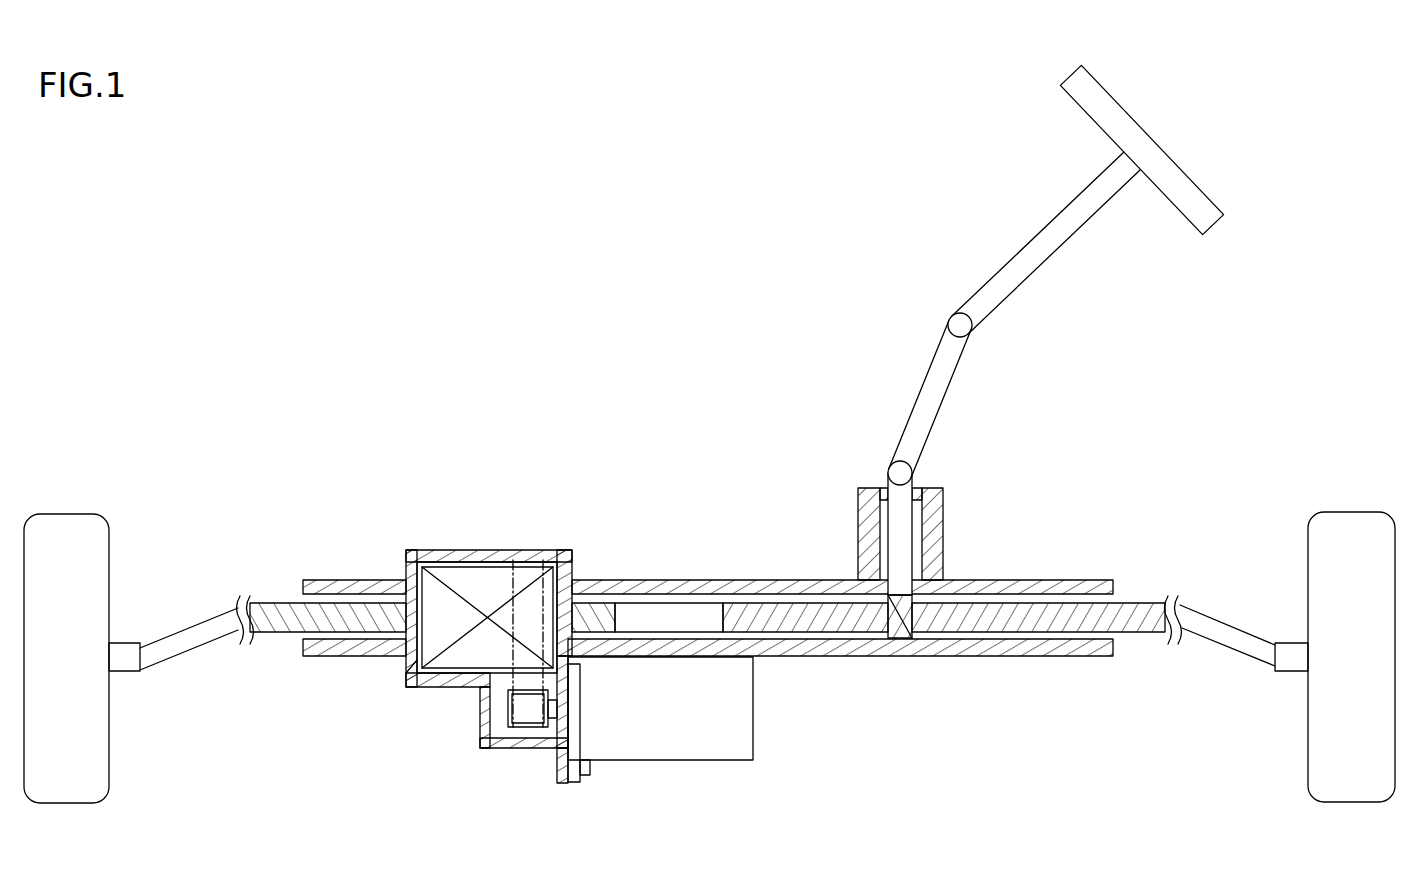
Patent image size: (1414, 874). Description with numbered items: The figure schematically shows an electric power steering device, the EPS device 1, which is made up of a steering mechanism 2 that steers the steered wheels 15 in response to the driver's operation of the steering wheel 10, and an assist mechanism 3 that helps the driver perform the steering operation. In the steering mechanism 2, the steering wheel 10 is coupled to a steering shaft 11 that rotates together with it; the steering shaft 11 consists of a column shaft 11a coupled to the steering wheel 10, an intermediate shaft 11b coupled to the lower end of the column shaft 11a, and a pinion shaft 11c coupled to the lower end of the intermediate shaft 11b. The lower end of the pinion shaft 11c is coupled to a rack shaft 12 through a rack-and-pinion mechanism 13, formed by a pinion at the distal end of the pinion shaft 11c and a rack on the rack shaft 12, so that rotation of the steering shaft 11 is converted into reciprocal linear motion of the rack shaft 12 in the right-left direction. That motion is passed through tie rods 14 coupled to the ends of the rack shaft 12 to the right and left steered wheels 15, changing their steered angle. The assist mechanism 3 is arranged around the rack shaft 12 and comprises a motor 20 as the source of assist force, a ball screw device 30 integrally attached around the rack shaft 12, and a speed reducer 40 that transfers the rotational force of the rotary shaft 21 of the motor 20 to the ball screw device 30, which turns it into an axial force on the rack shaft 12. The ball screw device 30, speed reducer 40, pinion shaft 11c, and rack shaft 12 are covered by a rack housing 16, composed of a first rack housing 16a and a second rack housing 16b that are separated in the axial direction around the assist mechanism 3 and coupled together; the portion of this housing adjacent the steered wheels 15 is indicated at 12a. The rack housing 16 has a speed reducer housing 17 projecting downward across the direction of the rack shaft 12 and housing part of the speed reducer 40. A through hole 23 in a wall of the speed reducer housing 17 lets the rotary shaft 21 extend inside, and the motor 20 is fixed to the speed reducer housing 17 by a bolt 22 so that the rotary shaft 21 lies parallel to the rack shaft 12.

The EPS device 1 is at (718, 213).
The steering mechanism 2 is at (1178, 302).
The assist mechanism 3 is at (586, 541).
The steering wheel 10 is at (1118, 99).
The steering shaft 11 is at (972, 314).
The column shaft 11a is at (1016, 244).
The intermediate shaft 11b is at (922, 388).
The pinion shaft 11c is at (869, 498).
The rack shaft 12 is at (770, 637).
The rack housing 12a is at (362, 613).
The rack-and-pinion mechanism 13 is at (903, 642).
The tie rod 14 is at (205, 648).
The steered wheel 15 is at (72, 512).
The rack housing 16 is at (497, 586).
The first rack housing 16a is at (480, 550).
The second rack housing 16b is at (543, 608).
The speed reducer housing 17 is at (477, 748).
The motor 20 is at (665, 767).
The rotary shaft 21 is at (553, 723).
The bolt 22 is at (588, 770).
The through hole 23 is at (580, 688).
The ball screw device 30 is at (413, 660).
The speed reducer 40 is at (504, 678).